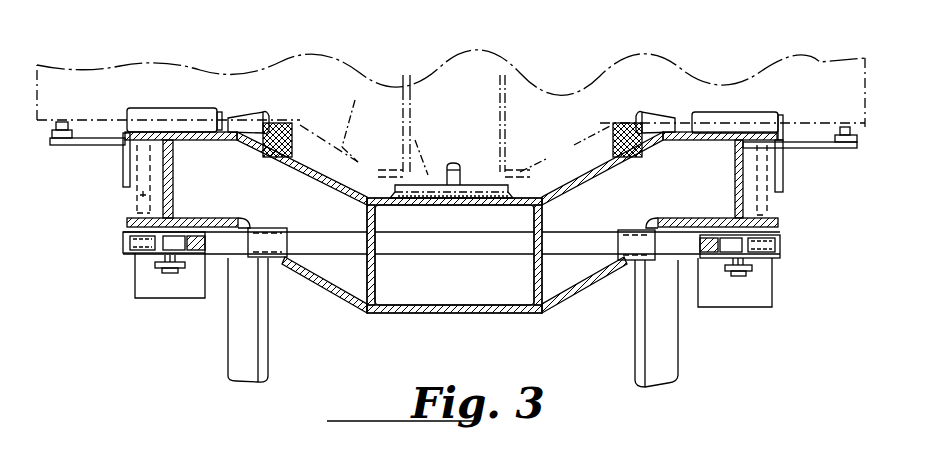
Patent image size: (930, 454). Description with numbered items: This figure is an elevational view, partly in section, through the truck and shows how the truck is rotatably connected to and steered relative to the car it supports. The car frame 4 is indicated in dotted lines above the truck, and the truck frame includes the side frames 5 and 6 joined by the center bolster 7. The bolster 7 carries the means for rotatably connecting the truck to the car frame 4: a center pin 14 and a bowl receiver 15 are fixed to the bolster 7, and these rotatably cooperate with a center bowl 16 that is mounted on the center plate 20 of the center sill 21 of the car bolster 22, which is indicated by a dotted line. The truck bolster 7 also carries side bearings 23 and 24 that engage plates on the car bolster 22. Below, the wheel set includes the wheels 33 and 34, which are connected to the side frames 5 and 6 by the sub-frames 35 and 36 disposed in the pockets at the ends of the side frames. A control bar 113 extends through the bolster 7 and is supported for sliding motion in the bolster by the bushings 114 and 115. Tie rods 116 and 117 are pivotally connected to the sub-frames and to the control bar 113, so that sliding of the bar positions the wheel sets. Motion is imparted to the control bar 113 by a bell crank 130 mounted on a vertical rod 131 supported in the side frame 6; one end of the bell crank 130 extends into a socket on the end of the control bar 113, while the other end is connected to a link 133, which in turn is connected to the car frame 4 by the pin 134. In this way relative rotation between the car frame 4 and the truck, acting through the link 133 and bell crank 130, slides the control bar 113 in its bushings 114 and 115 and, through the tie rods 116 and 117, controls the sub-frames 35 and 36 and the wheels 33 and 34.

The car frame 4 is at (286, 62).
The side frame 5 is at (735, 115).
The side frame 6 is at (165, 110).
The center bolster 7 is at (402, 313).
The center pin 14 is at (452, 163).
The bowl receiver 15 is at (395, 190).
The center bowl 16 is at (445, 207).
The center plate 20 is at (415, 140).
The center sill 21 is at (400, 80).
The car bolster 22 is at (356, 121).
The side bearing 23 is at (275, 123).
The side bearing 24 is at (597, 144).
The wheel 33 is at (677, 363).
The wheel 34 is at (240, 353).
The sub-frame 35 is at (763, 288).
The sub-frame 36 is at (143, 282).
The control bar 113 is at (437, 245).
The bushing 114 is at (632, 228).
The bushing 115 is at (275, 228).
The tie rod 116 is at (708, 243).
The tie rod 117 is at (197, 256).
The bell crank 130 is at (104, 143).
The vertical rod 131 is at (132, 197).
The link 133 is at (62, 138).
The pin 134 is at (68, 122).